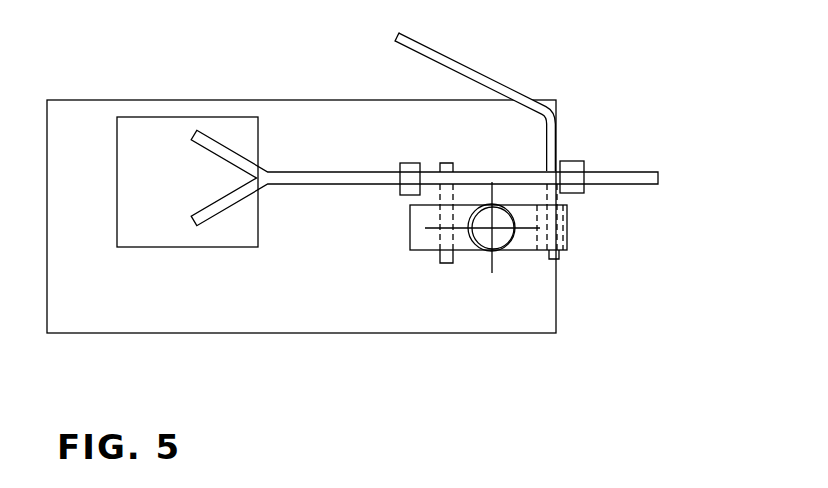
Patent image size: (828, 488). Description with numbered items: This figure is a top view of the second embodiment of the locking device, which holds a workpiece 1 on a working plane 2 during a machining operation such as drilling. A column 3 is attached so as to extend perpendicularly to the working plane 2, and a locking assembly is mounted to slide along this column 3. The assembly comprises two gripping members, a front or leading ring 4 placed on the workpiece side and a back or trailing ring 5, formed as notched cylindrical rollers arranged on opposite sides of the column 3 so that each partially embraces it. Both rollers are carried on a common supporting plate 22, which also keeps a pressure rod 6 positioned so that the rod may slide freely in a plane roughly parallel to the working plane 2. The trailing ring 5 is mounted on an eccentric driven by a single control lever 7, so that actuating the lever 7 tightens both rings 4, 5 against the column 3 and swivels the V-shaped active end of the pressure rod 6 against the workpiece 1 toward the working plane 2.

The workpiece 1 is at (114, 191).
The working plane 2 is at (148, 336).
The column 3 is at (499, 240).
The front or leading ring 4 is at (427, 252).
The back or trailing ring 5 is at (569, 244).
The pressure rod 6 is at (333, 168).
The control lever 7 is at (473, 68).
The supporting plate 22 is at (466, 169).